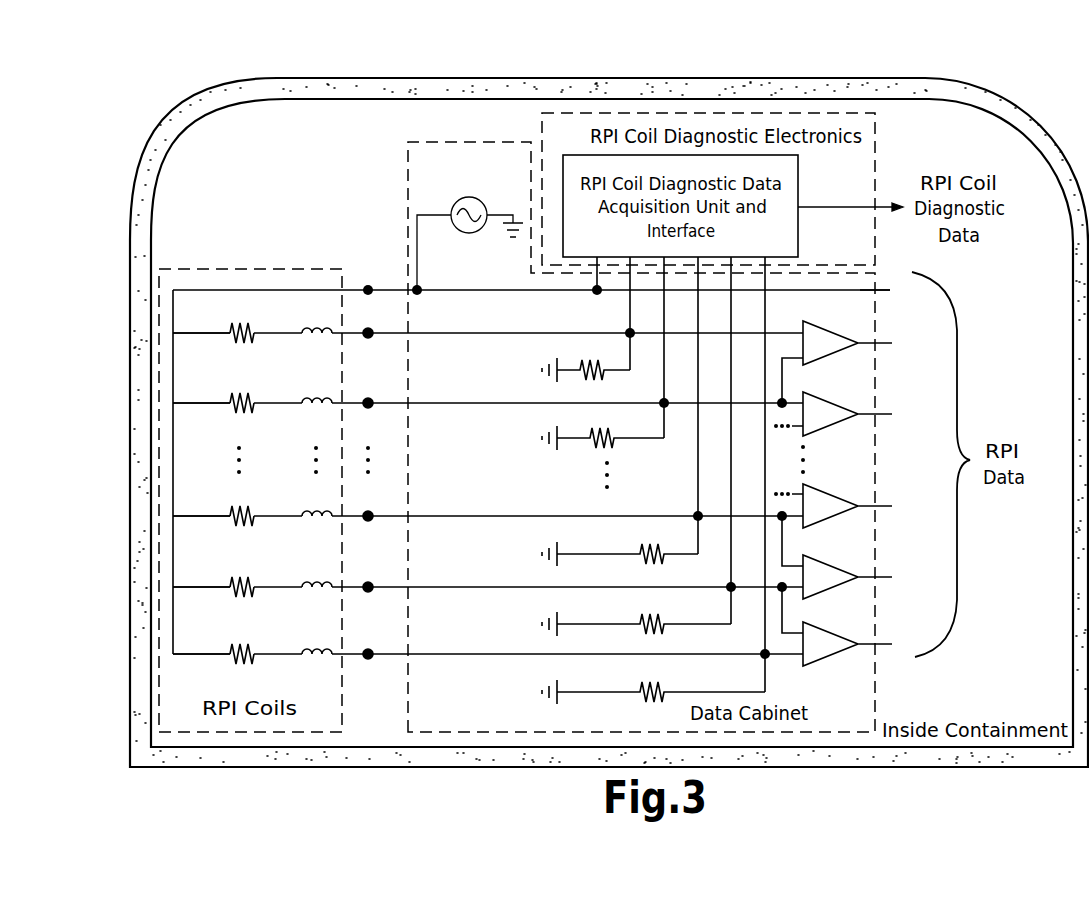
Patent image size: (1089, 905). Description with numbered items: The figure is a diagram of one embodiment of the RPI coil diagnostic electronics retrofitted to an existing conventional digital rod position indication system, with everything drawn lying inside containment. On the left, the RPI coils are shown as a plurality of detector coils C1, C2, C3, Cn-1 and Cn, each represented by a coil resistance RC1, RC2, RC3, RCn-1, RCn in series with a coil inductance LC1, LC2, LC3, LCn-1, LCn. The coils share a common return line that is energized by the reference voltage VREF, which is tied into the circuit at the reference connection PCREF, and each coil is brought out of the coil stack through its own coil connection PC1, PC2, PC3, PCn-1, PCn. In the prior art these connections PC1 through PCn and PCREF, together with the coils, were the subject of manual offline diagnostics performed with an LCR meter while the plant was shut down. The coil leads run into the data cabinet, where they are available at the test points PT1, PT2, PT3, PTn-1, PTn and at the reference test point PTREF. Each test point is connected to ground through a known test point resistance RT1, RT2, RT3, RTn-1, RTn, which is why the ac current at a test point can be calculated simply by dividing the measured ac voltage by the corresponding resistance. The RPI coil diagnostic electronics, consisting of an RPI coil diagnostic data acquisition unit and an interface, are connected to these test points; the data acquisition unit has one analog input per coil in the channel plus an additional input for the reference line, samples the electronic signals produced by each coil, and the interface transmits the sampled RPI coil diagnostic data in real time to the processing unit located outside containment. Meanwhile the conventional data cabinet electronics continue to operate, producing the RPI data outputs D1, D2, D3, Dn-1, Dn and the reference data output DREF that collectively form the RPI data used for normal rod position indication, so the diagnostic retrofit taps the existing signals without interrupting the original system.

The reference voltage VREF is at (470, 227).
The reference connection PCREF is at (392, 278).
The reference test point PTREF is at (600, 301).
The reference data output DREF is at (895, 291).
The coil resistance RCn is at (243, 323).
The coil inductance LCn is at (317, 318).
The coil connection PCn is at (375, 320).
The detector coil Cn is at (201, 346).
The coil resistance RCn-1 is at (248, 393).
The coil inductance LCn-1 is at (320, 388).
The coil connection PCn-1 is at (380, 390).
The detector coil Cn-1 is at (201, 416).
The coil resistance RC3 is at (243, 506).
The coil inductance LC3 is at (317, 501).
The coil connection PC3 is at (375, 503).
The detector coil C3 is at (201, 530).
The coil resistance RC2 is at (243, 577).
The coil inductance LC2 is at (317, 572).
The coil connection PC2 is at (375, 574).
The detector coil C2 is at (201, 600).
The coil resistance RC1 is at (243, 644).
The coil inductance LC1 is at (317, 639).
The coil connection PC1 is at (375, 641).
The detector coil C1 is at (201, 667).
The test point resistance RTn is at (586, 357).
The test point resistance RTn-1 is at (603, 428).
The test point resistance RT3 is at (620, 544).
The test point resistance RT2 is at (636, 614).
The test point resistance RT1 is at (653, 681).
The test point PTn is at (643, 343).
The test point PTn-1 is at (679, 414).
The test point PT3 is at (710, 528).
The test point PT2 is at (743, 599).
The test point PT1 is at (777, 666).
The RPI data output Dn is at (860, 343).
The RPI data output Dn-1 is at (865, 414).
The RPI data output D3 is at (860, 506).
The RPI data output D2 is at (860, 577).
The RPI data output D1 is at (860, 644).